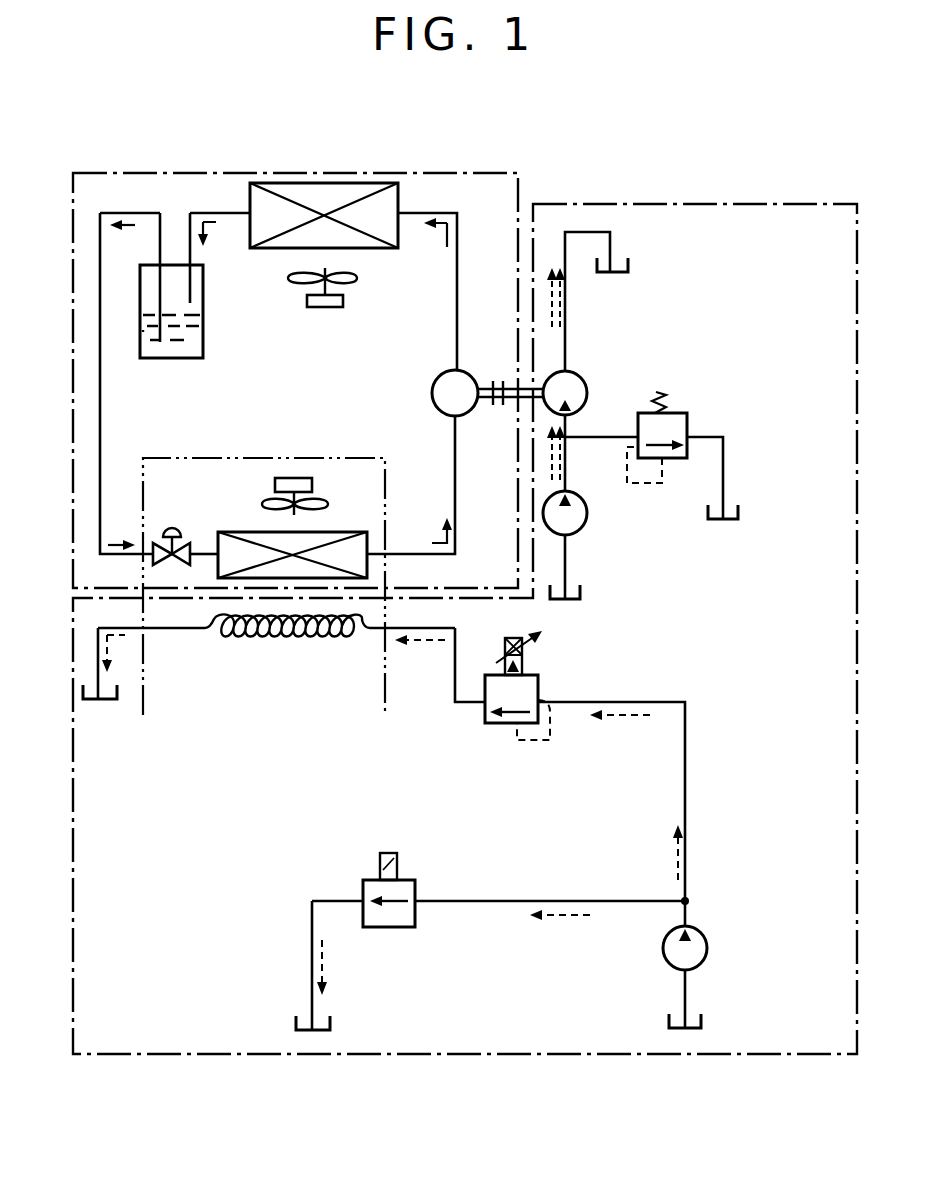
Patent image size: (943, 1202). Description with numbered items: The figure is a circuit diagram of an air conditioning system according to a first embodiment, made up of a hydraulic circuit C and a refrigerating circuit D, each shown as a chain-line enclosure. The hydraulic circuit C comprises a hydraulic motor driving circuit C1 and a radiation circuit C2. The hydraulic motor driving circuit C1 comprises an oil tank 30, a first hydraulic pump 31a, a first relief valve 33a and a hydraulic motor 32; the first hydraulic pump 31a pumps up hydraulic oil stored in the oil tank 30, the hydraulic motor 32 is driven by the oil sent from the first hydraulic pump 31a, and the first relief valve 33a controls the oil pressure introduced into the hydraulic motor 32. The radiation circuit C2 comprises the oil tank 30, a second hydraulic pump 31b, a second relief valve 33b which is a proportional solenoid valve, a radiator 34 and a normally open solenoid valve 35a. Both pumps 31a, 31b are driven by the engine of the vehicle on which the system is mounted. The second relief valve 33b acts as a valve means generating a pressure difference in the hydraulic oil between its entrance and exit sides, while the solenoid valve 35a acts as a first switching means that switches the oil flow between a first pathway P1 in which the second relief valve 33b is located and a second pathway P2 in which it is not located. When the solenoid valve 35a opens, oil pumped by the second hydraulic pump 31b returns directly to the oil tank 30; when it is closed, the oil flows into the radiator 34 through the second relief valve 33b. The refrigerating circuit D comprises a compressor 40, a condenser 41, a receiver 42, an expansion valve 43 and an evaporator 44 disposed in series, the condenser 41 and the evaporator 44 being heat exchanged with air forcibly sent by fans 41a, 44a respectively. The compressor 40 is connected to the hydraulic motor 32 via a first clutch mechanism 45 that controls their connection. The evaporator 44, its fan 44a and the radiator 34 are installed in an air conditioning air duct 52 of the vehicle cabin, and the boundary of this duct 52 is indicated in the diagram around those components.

The refrigerating circuit D is at (328, 170).
The hydraulic circuit C is at (680, 200).
The hydraulic motor driving circuit C1 is at (740, 446).
The radiation circuit C2 is at (720, 788).
The first pathway P1 is at (665, 701).
The second pathway P2 is at (602, 899).
The oil tank 30 is at (620, 273).
The first hydraulic pump 31a is at (587, 516).
The second hydraulic pump 31b is at (734, 938).
The hydraulic motor 32 is at (583, 381).
The first relief valve 33a is at (675, 412).
The second relief valve 33b is at (505, 725).
The radiator 34 is at (291, 641).
The solenoid valve 35a is at (404, 928).
The compressor 40 is at (432, 397).
The condenser 41 is at (383, 250).
The fan 41a is at (325, 307).
The receiver 42 is at (182, 358).
The expansion valve 43 is at (173, 527).
The evaporator 44 is at (357, 530).
The fan 44a is at (292, 477).
The first clutch mechanism 45 is at (498, 386).
The air conditioning air duct 52 is at (385, 680).